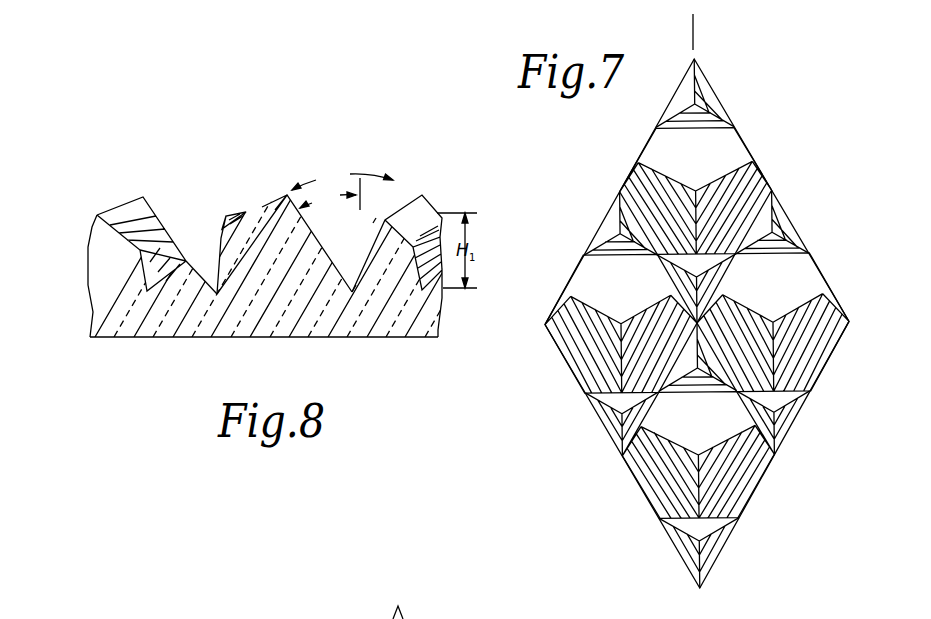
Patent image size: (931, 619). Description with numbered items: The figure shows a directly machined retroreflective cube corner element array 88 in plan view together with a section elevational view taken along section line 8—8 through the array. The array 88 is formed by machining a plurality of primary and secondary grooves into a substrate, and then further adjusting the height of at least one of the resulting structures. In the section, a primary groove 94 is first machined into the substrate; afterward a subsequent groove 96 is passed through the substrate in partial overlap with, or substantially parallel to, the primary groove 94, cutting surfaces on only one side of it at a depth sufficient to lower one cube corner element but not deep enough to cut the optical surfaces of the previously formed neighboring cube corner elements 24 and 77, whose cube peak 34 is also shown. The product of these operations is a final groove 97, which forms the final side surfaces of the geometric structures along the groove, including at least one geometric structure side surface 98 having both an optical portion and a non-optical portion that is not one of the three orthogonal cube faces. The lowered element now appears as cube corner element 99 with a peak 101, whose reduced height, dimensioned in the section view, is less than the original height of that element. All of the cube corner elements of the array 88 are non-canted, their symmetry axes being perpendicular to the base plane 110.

In FIG. 7, the section line 8— 8 is at (703, 24).
In FIG. 7, the cube corner element 24 is at (642, 166).
In FIG. 8, the cube corner element 24 is at (180, 282).
In FIG. 8, the cube peak 34 is at (197, 252).
In FIG. 7, the cube corner element 77 is at (727, 150).
In FIG. 8, the cube corner element 77 is at (270, 208).
In FIG. 7, the retroreflective cube corner element array 88 is at (790, 427).
In FIG. 8, the retroreflective cube corner element array 88 is at (88, 272).
In FIG. 8, the primary groove 94 is at (328, 204).
In FIG. 8, the subsequent groove 96 is at (375, 217).
In FIG. 8, the final groove 97 is at (342, 177).
In FIG. 8, the geometric structure side surface 98 is at (356, 222).
In FIG. 7, the cube corner element 99 is at (712, 107).
In FIG. 8, the cube corner element 99 is at (383, 213).
In FIG. 8, the peak 101 is at (373, 223).
In FIG. 8, the base plane 110 is at (143, 337).